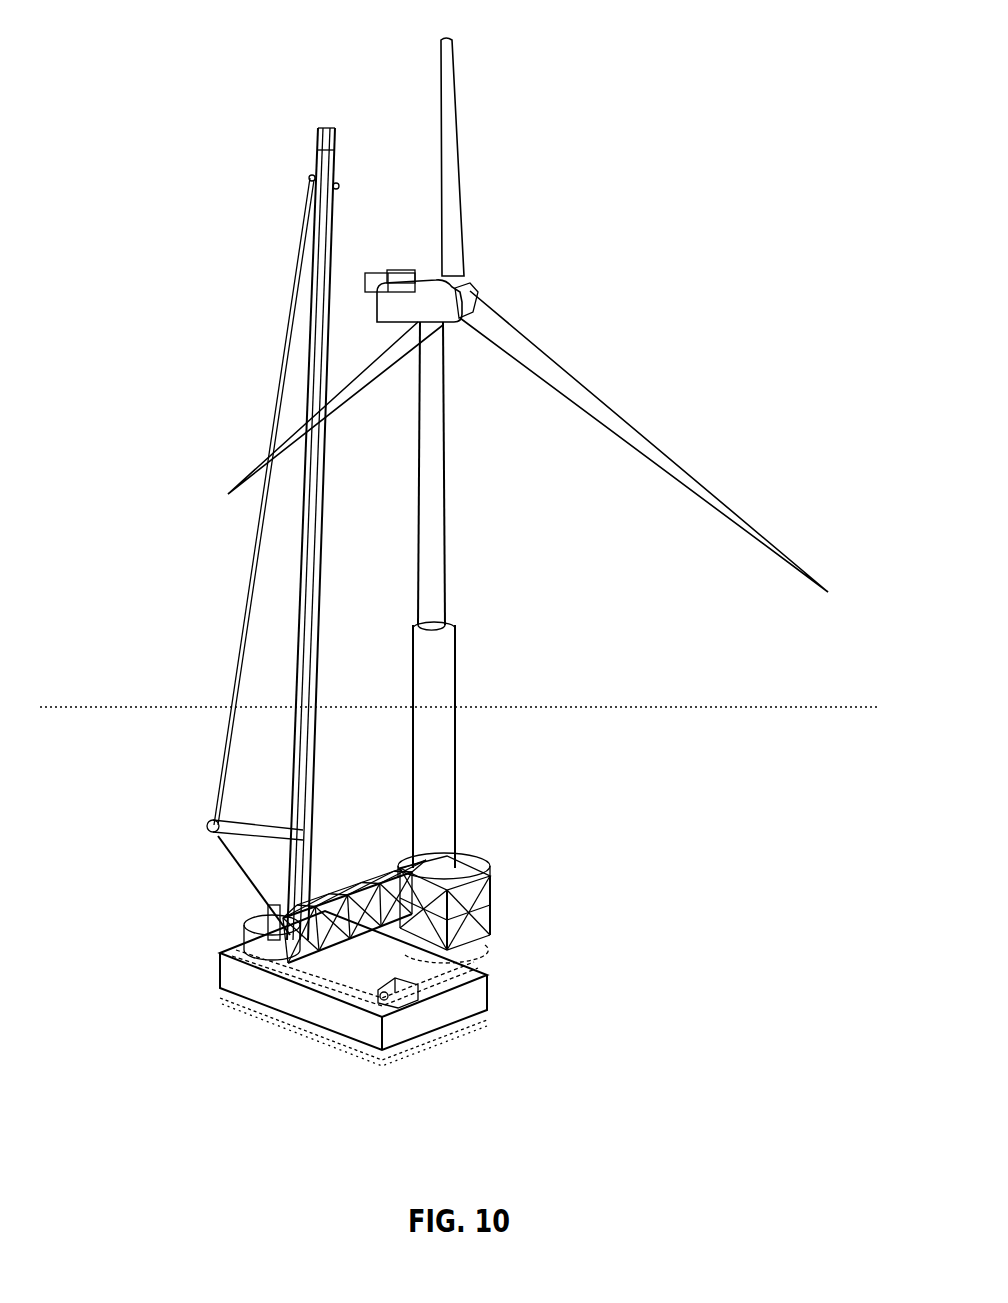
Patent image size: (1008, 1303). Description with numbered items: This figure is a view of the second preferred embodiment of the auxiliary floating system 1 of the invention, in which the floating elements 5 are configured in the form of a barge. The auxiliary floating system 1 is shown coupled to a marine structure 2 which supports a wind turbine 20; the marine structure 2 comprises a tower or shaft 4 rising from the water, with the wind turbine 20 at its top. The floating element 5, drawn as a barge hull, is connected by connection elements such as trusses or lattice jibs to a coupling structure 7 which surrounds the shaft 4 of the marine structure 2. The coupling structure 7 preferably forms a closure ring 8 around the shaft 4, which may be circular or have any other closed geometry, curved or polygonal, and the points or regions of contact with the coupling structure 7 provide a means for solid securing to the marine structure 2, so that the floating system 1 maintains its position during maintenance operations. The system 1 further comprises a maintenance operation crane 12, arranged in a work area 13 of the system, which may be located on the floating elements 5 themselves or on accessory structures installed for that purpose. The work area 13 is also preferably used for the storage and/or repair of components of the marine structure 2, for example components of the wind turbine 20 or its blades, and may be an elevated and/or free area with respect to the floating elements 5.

The auxiliary floating system 1 is at (299, 1039).
The marine structure 2 is at (653, 385).
The tower or shaft 4 is at (437, 800).
The floating element 5 is at (270, 980).
The coupling structure 7 is at (240, 935).
The closure ring 8 is at (492, 905).
The maintenance operation crane 12 is at (305, 347).
The work area 13 is at (417, 960).
The wind turbine 20 is at (470, 286).